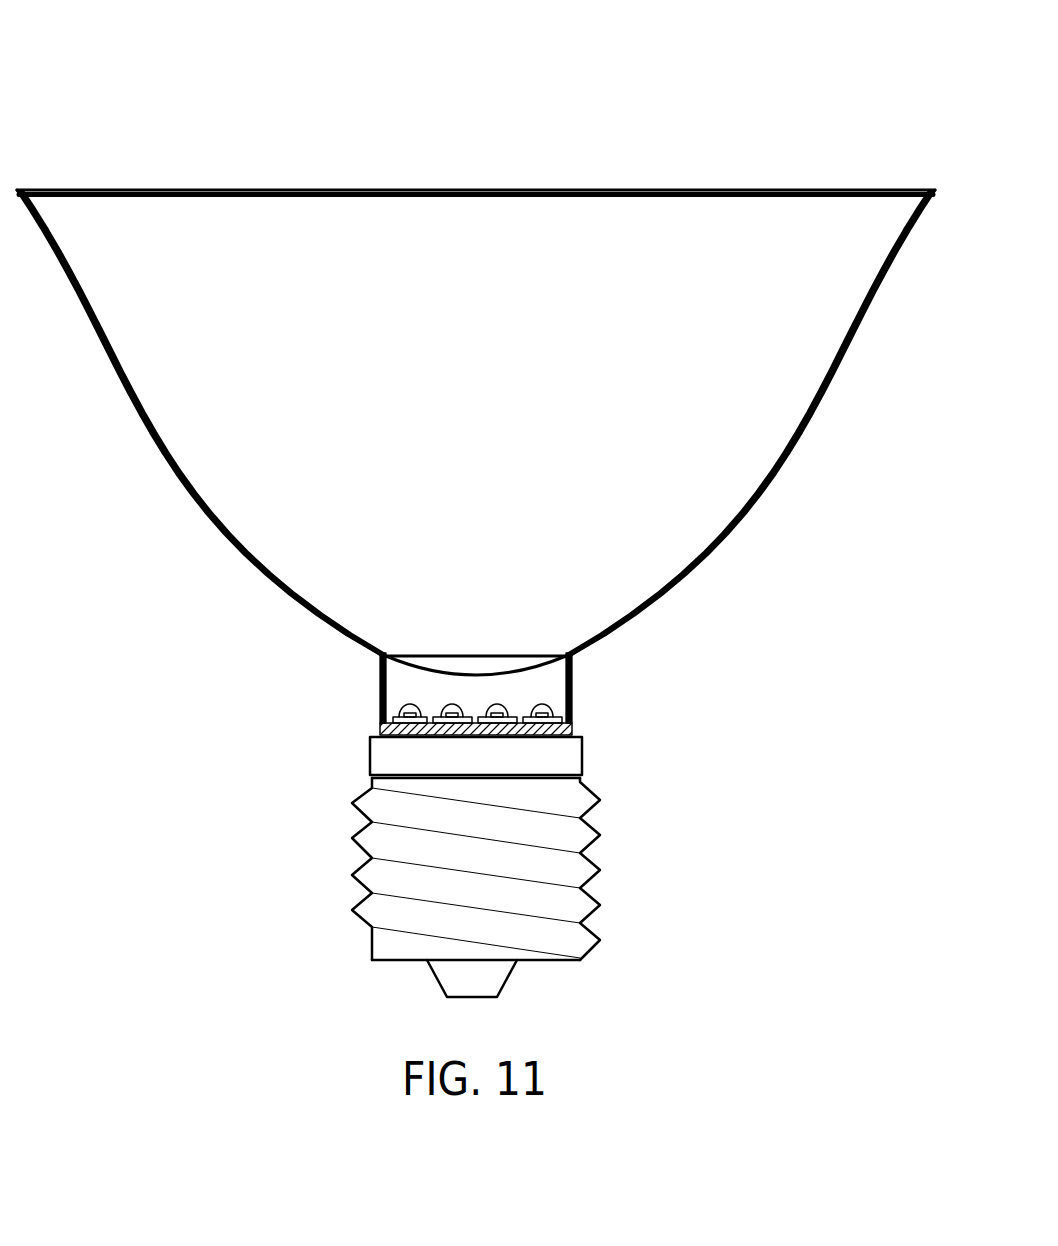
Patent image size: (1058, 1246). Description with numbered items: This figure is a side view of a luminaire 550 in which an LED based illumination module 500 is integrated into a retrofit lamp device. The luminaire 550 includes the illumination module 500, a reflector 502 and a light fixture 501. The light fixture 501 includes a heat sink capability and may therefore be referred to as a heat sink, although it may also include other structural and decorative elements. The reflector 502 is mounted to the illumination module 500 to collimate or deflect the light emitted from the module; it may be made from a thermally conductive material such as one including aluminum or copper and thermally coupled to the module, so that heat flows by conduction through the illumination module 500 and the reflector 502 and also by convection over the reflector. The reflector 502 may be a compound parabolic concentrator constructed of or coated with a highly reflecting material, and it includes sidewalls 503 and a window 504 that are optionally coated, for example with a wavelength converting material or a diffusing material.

The luminaire 550 is at (108, 70).
The illumination module 500 is at (380, 695).
The light fixture 501 is at (582, 754).
The reflector 502 is at (700, 566).
The sidewalls 503 is at (142, 407).
The window 504 is at (670, 196).